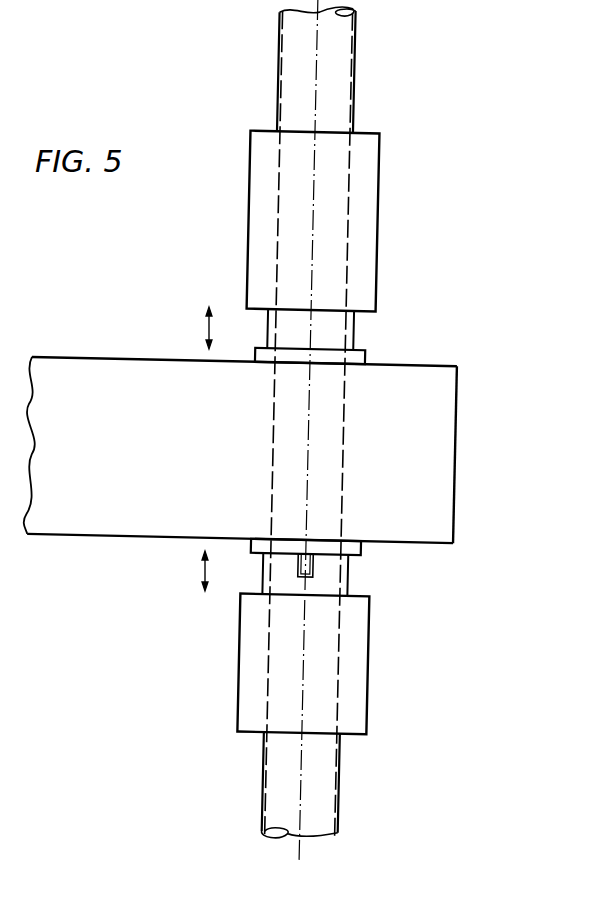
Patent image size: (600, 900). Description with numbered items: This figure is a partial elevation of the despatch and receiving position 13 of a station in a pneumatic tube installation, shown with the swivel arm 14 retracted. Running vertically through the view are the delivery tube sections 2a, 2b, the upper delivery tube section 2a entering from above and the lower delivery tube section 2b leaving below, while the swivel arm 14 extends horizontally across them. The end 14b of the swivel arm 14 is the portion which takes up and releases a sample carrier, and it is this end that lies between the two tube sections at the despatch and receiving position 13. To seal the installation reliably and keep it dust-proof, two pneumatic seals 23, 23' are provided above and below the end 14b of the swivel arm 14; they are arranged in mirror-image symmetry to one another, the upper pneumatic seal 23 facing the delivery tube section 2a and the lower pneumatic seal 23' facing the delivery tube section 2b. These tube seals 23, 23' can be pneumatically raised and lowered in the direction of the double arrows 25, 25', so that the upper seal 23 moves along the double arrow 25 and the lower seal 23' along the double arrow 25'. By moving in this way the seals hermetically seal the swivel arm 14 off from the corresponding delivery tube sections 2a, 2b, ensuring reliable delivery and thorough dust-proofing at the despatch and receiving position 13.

The delivery tube section 2a is at (345, 100).
The delivery tube section 2b is at (333, 786).
The despatch and receiving position 13 is at (315, 431).
The swivel arm 14 is at (273, 450).
The end of the swivel arm 14b is at (450, 398).
The pneumatic seal 23 is at (333, 341).
The pneumatic seal 23' is at (329, 564).
The double arrow 25 is at (189, 328).
The double arrow 25' is at (186, 571).